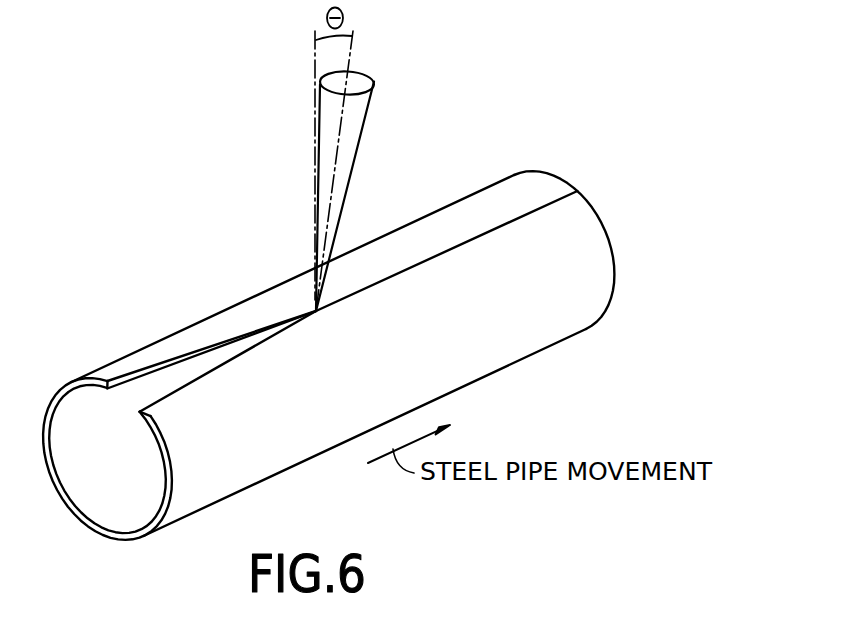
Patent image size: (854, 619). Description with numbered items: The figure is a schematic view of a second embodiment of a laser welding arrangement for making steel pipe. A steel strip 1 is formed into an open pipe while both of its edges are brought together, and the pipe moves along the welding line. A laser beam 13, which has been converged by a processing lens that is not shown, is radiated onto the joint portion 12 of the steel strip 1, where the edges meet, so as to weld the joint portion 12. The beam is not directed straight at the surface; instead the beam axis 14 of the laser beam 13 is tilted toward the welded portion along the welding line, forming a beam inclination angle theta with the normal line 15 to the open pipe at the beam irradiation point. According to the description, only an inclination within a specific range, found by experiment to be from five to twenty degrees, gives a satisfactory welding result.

The steel strip 1 is at (182, 331).
The joint portion 12 is at (316, 314).
The laser beam 13 is at (354, 155).
The beam axis 14 is at (350, 66).
The normal line 15 is at (313, 63).